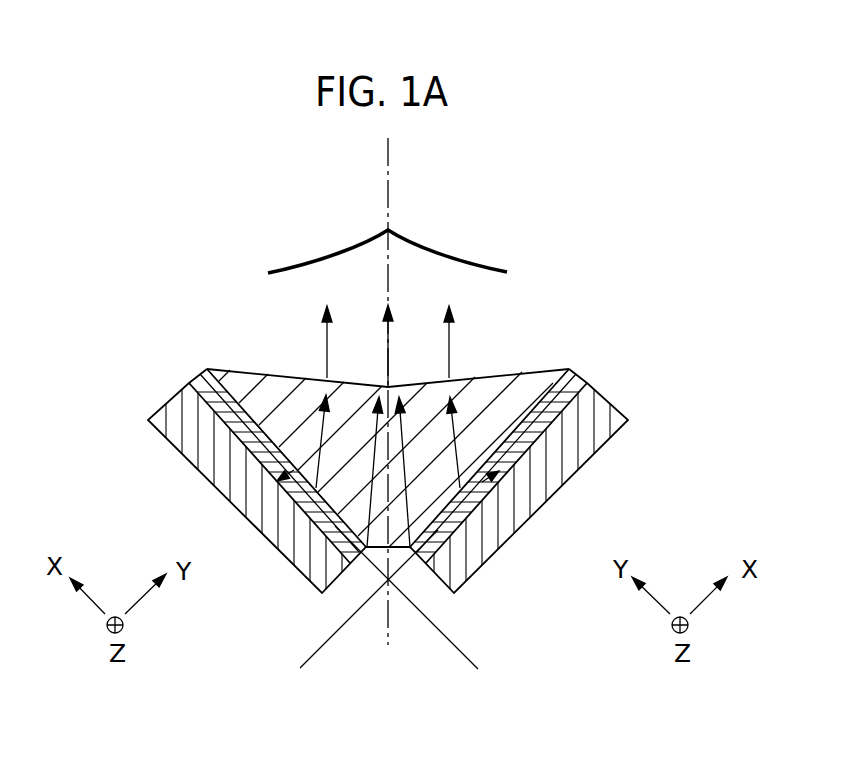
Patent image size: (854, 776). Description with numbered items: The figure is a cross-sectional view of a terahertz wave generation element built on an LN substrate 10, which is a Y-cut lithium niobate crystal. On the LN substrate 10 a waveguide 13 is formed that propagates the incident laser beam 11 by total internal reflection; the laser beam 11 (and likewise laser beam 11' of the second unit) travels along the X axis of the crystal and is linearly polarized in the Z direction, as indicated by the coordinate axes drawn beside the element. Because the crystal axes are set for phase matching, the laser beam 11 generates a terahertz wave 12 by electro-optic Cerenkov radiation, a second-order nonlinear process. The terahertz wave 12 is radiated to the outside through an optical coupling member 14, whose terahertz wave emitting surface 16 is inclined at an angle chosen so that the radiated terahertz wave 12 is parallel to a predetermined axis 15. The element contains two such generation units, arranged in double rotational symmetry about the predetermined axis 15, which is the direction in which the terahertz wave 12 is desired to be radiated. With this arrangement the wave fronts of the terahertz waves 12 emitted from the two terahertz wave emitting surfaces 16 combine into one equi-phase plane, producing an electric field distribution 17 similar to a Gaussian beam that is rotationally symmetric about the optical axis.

The LN substrate 10 is at (571, 477).
The laser beam 11 is at (348, 599).
The laser beam 11' is at (431, 597).
The terahertz wave 12 is at (326, 348).
The waveguide 13 is at (590, 383).
The optical coupling member 14 is at (562, 369).
The predetermined axis 15 is at (386, 172).
The terahertz wave emitting surface 16 is at (509, 372).
The electric field distribution 17 is at (466, 260).